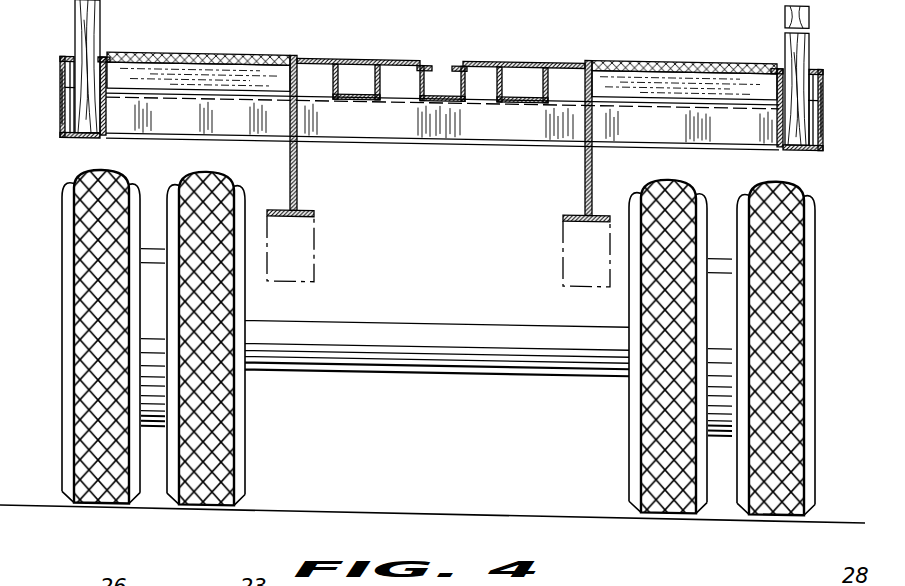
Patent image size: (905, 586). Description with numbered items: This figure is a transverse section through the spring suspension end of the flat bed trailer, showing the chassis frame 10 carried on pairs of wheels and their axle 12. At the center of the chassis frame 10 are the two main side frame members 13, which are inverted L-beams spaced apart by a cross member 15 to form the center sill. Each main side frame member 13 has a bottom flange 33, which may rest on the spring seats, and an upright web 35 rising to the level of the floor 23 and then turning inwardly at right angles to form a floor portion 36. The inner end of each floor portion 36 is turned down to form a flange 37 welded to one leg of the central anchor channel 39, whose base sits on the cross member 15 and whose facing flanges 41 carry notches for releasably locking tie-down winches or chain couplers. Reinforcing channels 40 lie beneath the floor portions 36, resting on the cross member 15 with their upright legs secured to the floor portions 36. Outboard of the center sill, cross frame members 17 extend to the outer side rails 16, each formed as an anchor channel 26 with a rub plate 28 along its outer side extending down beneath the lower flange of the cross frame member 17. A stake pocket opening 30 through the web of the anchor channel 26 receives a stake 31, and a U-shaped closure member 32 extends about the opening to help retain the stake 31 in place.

The chassis frame 10 is at (58, 144).
The axle 12 is at (478, 372).
The main side frame member 13 is at (290, 180).
The cross member 15 is at (480, 143).
The outer side rail 16 is at (58, 118).
The cross frame member 17 is at (215, 138).
The floor 23 is at (215, 52).
The anchor channel 26 is at (62, 57).
The rub plate 28 is at (60, 80).
The stake pocket opening 30 is at (78, 90).
The stake 31 is at (785, 0).
The closure member 32 is at (100, 118).
The bottom flange 33 is at (280, 207).
The upright web 35 is at (302, 182).
The floor portion 36 is at (390, 26).
The down-turned flange 37 is at (458, 64).
The central anchor channel 39 is at (424, 88).
The reinforcing channel 40 is at (340, 88).
The facing flange 41 is at (436, 64).